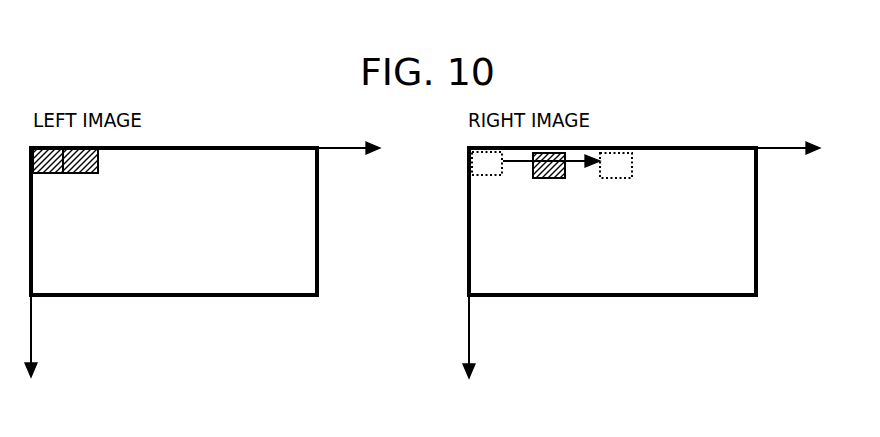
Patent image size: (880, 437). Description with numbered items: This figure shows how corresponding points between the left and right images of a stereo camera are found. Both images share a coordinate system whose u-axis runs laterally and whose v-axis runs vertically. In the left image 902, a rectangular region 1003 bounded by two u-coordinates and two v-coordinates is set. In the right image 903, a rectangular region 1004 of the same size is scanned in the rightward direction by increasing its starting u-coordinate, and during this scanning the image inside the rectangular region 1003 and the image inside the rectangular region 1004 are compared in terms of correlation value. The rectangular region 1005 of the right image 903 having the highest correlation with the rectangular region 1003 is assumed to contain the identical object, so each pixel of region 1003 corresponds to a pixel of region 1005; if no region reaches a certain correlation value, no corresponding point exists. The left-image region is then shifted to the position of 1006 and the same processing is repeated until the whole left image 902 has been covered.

The left image 902 is at (230, 296).
The right image 903 is at (673, 296).
The rectangular region 1003 is at (117, 190).
The rectangular region 1004 is at (487, 175).
The rectangular region 1005 is at (557, 178).
The shifted position of the rectangular region 1006 is at (99, 172).